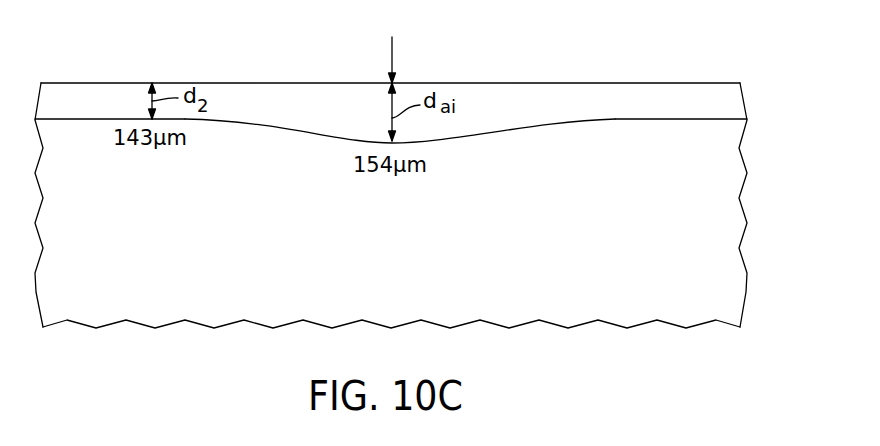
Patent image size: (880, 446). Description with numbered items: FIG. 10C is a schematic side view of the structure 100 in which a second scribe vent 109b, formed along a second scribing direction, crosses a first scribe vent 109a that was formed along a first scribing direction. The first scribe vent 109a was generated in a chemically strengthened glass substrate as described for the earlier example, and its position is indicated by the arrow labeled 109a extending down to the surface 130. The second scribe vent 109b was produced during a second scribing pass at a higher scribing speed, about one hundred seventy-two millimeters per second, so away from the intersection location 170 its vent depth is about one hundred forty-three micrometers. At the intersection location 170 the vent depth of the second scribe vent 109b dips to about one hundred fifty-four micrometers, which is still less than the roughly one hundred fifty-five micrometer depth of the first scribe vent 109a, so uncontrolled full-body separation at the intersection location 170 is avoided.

The semiconductor structure 100 is at (650, 62).
The first scribe vent 109a is at (392, 57).
The second scribe vent 109b is at (105, 92).
The top surface layer 130 is at (568, 80).
The intersection location 170 is at (340, 145).